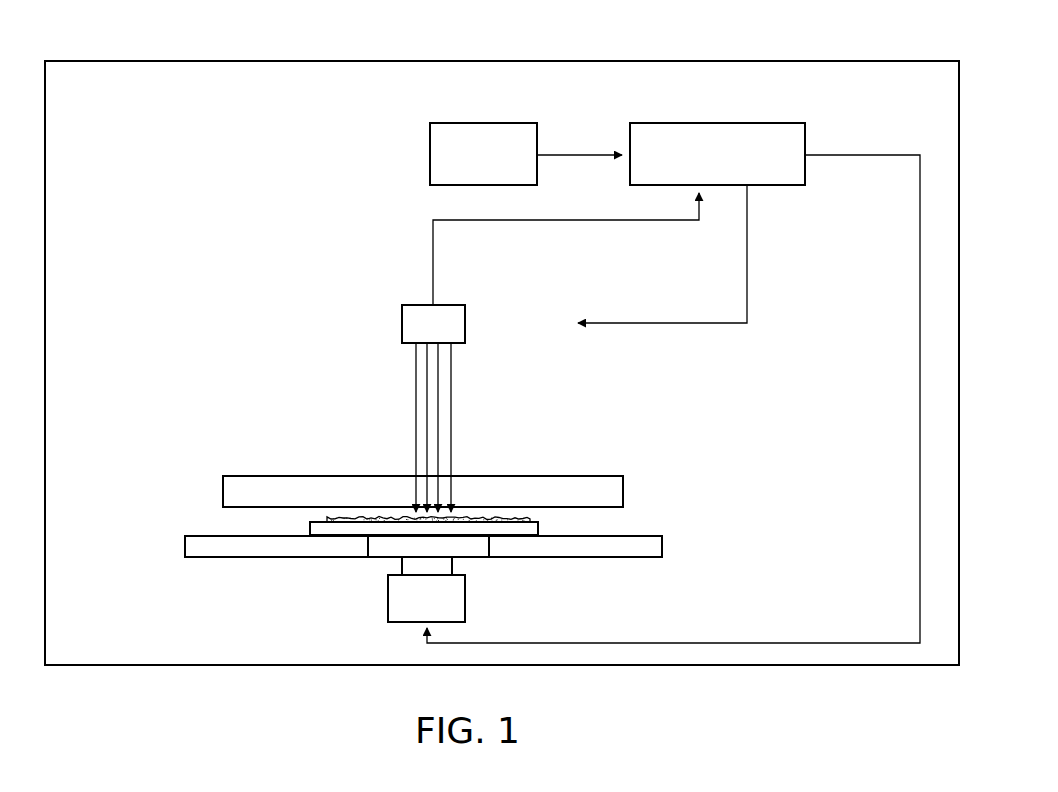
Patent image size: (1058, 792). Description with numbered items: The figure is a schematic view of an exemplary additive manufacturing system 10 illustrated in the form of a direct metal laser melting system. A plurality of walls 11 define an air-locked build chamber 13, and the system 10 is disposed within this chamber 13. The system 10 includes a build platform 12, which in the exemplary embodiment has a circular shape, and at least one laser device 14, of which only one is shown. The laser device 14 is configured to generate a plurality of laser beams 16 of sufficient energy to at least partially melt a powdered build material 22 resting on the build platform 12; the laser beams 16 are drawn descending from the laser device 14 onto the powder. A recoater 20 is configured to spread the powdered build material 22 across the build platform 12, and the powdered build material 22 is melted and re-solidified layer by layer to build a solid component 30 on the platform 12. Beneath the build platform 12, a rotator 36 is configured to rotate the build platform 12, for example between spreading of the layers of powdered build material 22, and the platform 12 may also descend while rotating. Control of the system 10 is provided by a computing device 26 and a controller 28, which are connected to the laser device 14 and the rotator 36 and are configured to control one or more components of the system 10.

The additive manufacturing system 10 is at (740, 40).
The walls 11 is at (46, 162).
The build platform 12 is at (649, 536).
The air-locked build chamber 13 is at (199, 62).
The laser device 14 is at (402, 322).
The laser beams 16 is at (416, 405).
The recoater 20 is at (489, 476).
The powdered build material 22 is at (365, 516).
The computing device 26 is at (472, 122).
The controller 28 is at (720, 122).
The component 30 is at (310, 528).
The rotator 36 is at (388, 598).